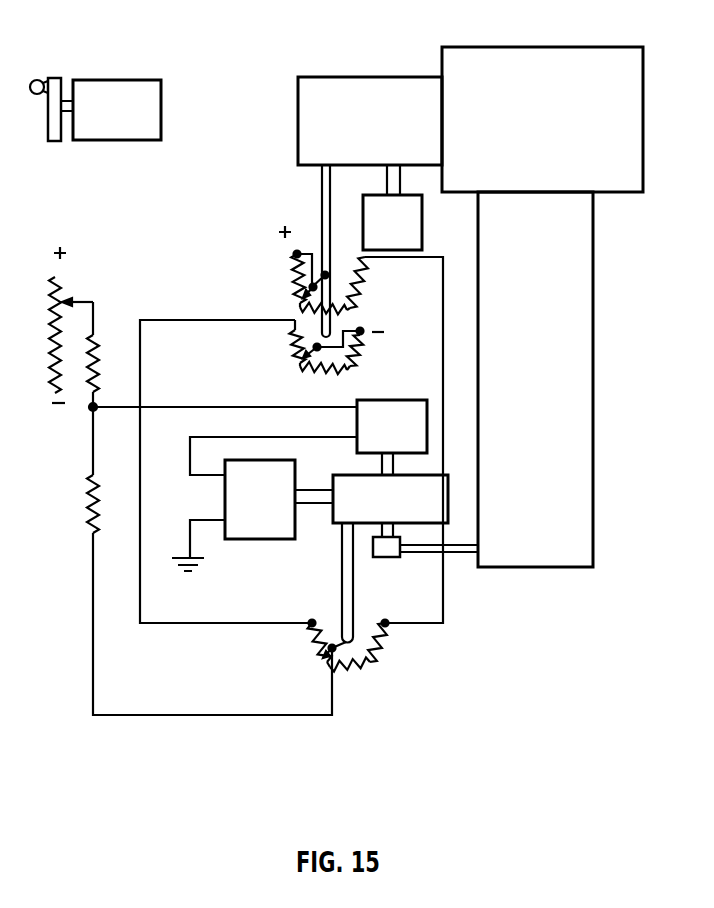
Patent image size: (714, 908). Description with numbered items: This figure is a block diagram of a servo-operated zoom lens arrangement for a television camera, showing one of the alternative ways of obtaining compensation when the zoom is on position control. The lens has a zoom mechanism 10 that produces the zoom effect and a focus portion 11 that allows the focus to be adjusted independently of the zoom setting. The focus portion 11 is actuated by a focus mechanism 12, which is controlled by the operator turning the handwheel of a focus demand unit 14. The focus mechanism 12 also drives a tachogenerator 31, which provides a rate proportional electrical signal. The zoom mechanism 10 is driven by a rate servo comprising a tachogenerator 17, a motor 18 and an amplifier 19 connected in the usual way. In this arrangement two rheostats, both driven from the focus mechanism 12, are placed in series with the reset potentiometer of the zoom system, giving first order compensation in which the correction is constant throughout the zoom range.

The zoom mechanism 10 is at (535, 379).
The focus portion 11 is at (542, 119).
The focus mechanism 12 is at (370, 121).
The focus demand unit 14 is at (95, 109).
The tachogenerator 17 is at (392, 426).
The motor 18 is at (390, 499).
The amplifier 19 is at (260, 499).
The tachogenerator 31 is at (392, 222).